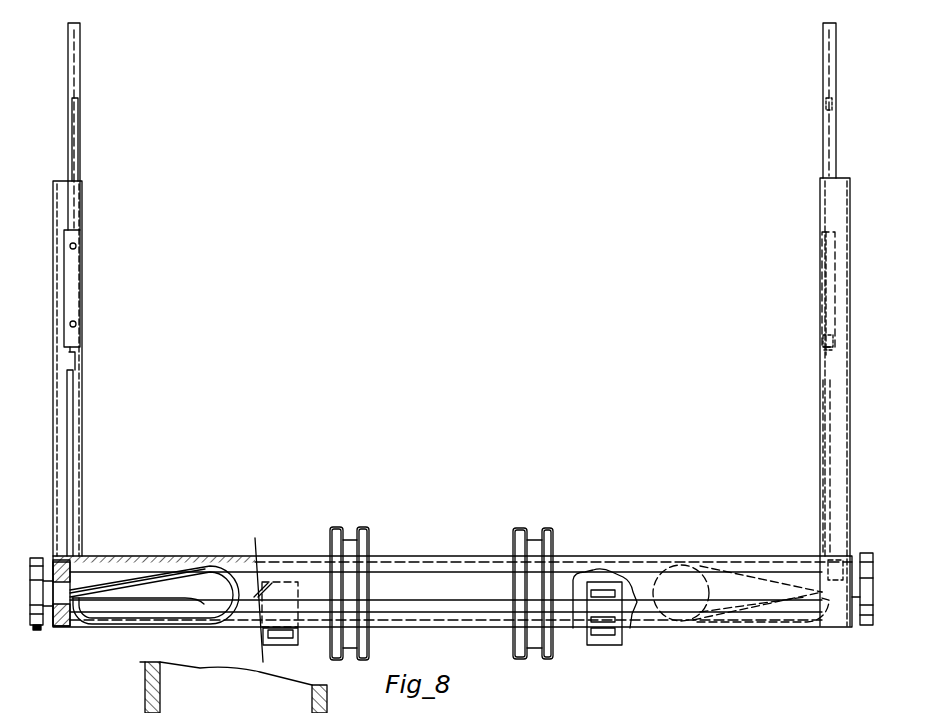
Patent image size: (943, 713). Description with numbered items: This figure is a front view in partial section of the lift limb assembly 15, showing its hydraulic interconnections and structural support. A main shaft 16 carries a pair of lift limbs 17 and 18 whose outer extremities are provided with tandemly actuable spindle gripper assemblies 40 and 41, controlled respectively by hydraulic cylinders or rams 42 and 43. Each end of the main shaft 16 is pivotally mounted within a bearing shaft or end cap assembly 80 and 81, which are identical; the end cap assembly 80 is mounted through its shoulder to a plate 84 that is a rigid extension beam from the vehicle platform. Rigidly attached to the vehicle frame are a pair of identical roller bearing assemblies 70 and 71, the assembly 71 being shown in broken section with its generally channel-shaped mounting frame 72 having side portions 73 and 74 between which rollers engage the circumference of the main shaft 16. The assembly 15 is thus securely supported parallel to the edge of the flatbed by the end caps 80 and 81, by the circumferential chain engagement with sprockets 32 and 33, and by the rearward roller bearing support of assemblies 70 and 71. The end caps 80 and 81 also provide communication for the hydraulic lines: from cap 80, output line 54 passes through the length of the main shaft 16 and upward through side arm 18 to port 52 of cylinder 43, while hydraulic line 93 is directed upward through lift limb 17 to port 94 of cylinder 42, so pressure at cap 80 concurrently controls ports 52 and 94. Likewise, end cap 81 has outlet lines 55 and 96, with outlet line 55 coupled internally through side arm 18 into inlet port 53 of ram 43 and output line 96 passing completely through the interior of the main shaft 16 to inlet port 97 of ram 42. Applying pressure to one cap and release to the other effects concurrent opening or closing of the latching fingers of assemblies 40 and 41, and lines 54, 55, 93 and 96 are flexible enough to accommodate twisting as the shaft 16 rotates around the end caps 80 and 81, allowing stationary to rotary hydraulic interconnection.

The lift limb assembly 15 is at (462, 372).
The main shaft 16 is at (443, 552).
The lift limb 17 is at (124, 272).
The lift limb 18 is at (800, 193).
The sprocket 32 is at (363, 527).
The sprocket 33 is at (513, 530).
The spindle gripper assembly 40 is at (92, 64).
The spindle gripper assembly 41 is at (818, 62).
The hydraulic cylinder 42 is at (76, 304).
The hydraulic cylinder 43 is at (826, 282).
The port 52 is at (820, 246).
The inlet port 53 is at (822, 326).
The output line 54 is at (190, 585).
The outlet line 55 is at (678, 565).
The roller bearing assembly 70 is at (290, 645).
The roller bearing assembly 71 is at (622, 652).
The mounting frame 72 is at (600, 645).
The side portion 73 is at (583, 630).
The side portion 74 is at (620, 630).
The end cap assembly 80 is at (37, 631).
The end cap assembly 81 is at (868, 628).
The plate 84 is at (125, 712).
The hydraulic line 93 is at (138, 582).
The port 94 is at (77, 247).
The output line 96 is at (733, 597).
The inlet port 97 is at (77, 326).